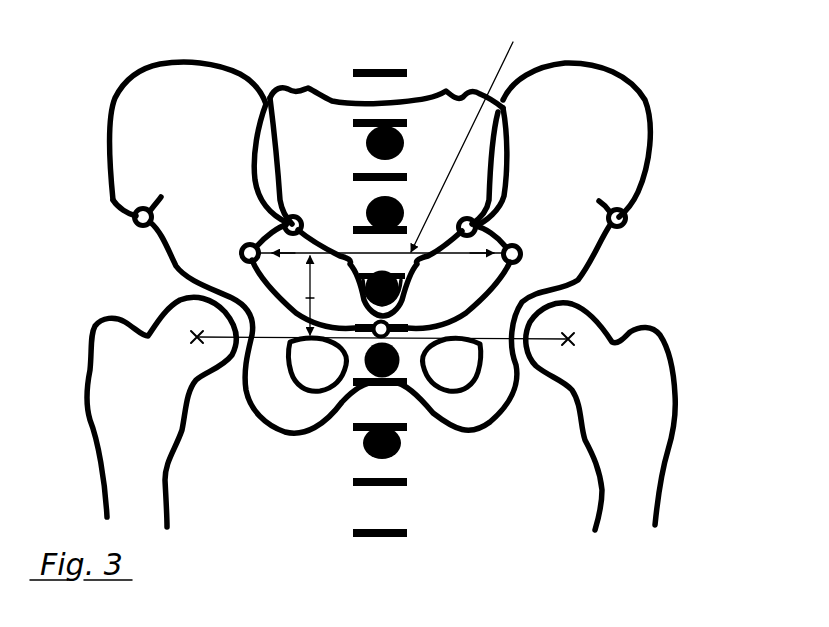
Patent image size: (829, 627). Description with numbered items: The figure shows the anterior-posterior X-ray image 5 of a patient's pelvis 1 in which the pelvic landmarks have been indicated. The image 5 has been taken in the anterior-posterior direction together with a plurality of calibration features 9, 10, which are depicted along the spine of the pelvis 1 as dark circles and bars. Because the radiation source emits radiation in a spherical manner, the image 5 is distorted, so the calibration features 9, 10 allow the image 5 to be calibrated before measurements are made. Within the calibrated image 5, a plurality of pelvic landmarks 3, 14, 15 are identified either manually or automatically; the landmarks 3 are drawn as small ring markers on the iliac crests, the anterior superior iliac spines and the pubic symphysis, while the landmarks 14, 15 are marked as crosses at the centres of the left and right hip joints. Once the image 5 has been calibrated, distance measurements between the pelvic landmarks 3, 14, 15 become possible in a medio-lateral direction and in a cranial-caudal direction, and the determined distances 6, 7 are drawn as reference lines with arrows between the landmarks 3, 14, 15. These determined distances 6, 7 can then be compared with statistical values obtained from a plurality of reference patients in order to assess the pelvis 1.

The pelvis 1 is at (170, 88).
The pelvic landmark 3 is at (134, 216).
The image 5 is at (680, 80).
The distance 6 is at (469, 134).
The distance 7 is at (308, 300).
The calibration feature 9 is at (403, 450).
The calibration feature 10 is at (390, 540).
The pelvic landmark 14 is at (190, 343).
The pelvic landmark 15 is at (574, 348).